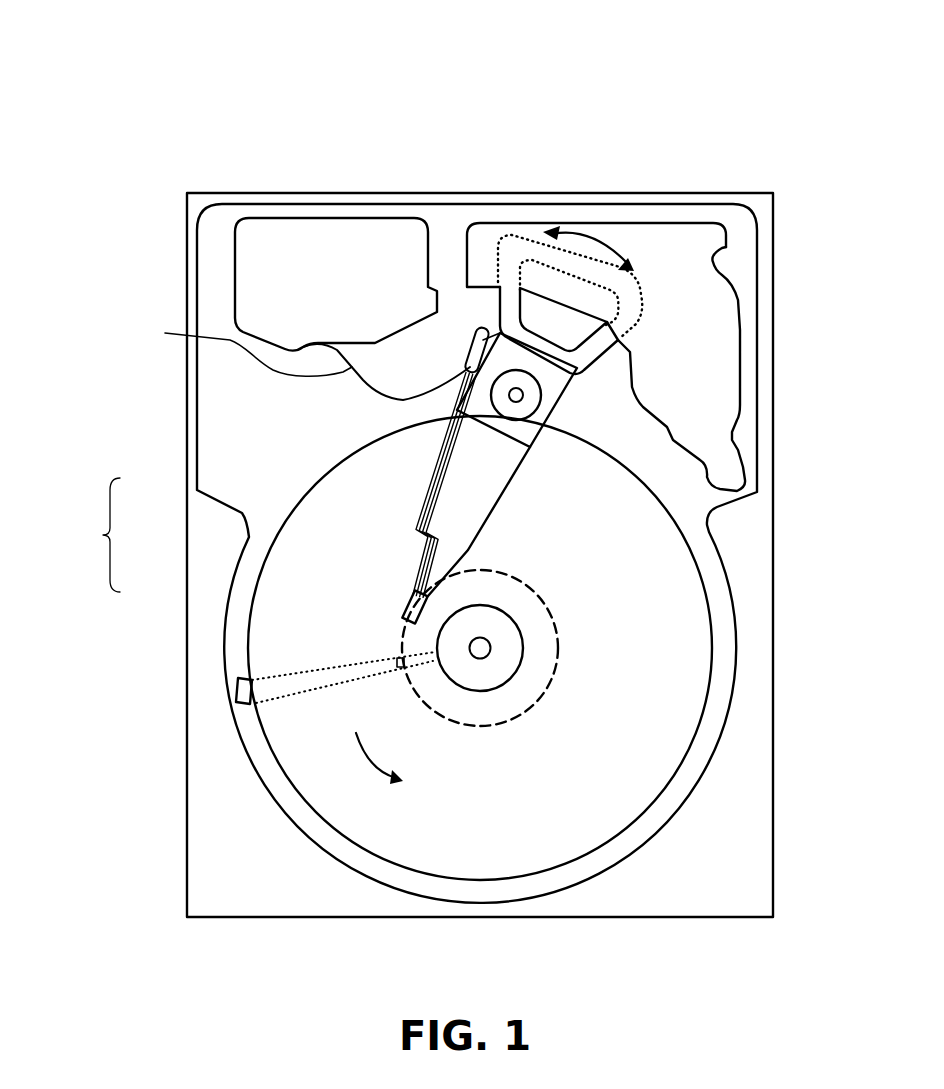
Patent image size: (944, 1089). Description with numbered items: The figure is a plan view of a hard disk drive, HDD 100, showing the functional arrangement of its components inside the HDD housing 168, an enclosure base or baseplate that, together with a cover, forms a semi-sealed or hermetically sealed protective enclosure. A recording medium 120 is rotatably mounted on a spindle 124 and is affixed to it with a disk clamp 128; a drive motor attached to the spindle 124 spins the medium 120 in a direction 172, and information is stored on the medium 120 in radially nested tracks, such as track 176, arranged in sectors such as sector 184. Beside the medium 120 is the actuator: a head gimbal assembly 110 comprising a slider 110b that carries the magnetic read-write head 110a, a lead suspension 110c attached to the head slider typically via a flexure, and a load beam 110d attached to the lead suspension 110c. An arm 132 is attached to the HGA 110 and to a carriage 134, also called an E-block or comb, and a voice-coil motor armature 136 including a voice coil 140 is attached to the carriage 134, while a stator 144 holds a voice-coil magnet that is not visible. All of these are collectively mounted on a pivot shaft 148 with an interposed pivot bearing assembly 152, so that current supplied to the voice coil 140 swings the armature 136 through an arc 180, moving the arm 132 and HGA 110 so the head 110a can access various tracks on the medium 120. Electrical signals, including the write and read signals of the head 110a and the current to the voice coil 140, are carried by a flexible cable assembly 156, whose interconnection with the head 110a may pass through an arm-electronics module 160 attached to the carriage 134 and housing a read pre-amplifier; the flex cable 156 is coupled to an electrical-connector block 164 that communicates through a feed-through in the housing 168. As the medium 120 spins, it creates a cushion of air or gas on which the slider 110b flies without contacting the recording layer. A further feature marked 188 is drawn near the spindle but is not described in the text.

The hard disk drive 100 is at (116, 80).
The head gimbal assembly 110 is at (90, 535).
The magnetic read-write head 110a is at (398, 622).
The slider 110b is at (414, 607).
The lead suspension 110c is at (420, 580).
The load beam 110d is at (420, 533).
The recording medium 120 is at (656, 602).
The spindle 124 is at (481, 647).
The disk clamp 128 is at (503, 661).
The arm 132 is at (473, 497).
The carriage 134 is at (533, 427).
The armature 136 is at (497, 288).
The voice coil 140 is at (510, 297).
The stator 144 is at (707, 307).
The pivot shaft 148 is at (522, 395).
The pivot bearing assembly 152 is at (523, 406).
The flexible cable assembly 156 is at (295, 360).
The arm-electronics module 160 is at (470, 360).
The electrical-connector block 164 is at (258, 285).
The HDD housing 168 is at (752, 202).
The direction 172 is at (404, 756).
The track 176 is at (548, 605).
The arc 180 is at (586, 244).
The sector 184 is at (235, 692).
The head slider position marker 188 is at (395, 662).